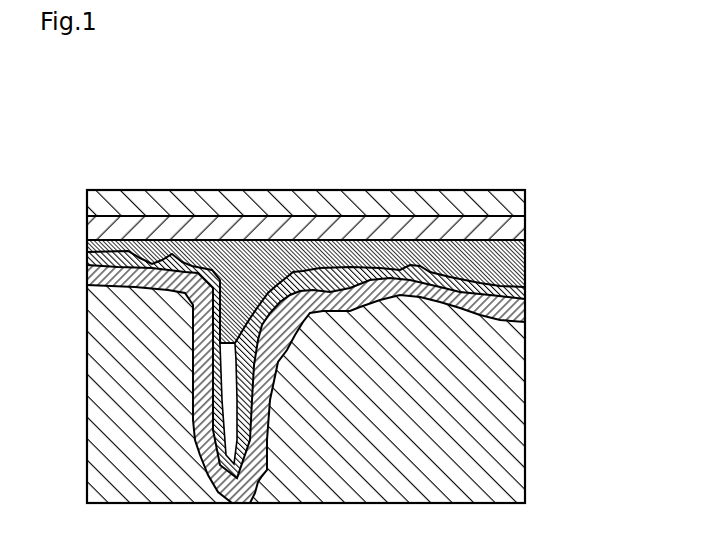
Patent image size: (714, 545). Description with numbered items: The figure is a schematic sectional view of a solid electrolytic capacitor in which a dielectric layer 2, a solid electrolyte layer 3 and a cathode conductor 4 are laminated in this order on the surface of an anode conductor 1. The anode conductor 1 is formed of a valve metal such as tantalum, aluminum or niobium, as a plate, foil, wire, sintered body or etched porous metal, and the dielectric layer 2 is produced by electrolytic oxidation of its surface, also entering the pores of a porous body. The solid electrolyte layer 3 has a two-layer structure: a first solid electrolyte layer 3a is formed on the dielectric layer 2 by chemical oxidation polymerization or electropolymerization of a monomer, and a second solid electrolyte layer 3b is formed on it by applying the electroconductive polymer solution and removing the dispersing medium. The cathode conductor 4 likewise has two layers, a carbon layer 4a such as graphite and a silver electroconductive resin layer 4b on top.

The anode conductor 1 is at (510, 405).
The dielectric layer 2 is at (525, 320).
The solid electrolyte layer 3 is at (371, 354).
The first solid electrolyte layer 3a is at (525, 297).
The second solid electrolyte layer 3b is at (525, 265).
The cathode conductor 4 is at (371, 175).
The carbon layer 4a is at (525, 222).
The silver electroconductive resin layer 4b is at (525, 190).